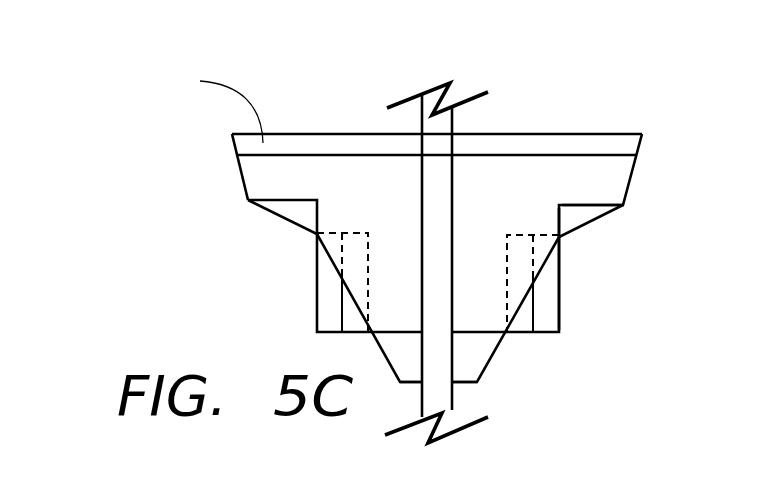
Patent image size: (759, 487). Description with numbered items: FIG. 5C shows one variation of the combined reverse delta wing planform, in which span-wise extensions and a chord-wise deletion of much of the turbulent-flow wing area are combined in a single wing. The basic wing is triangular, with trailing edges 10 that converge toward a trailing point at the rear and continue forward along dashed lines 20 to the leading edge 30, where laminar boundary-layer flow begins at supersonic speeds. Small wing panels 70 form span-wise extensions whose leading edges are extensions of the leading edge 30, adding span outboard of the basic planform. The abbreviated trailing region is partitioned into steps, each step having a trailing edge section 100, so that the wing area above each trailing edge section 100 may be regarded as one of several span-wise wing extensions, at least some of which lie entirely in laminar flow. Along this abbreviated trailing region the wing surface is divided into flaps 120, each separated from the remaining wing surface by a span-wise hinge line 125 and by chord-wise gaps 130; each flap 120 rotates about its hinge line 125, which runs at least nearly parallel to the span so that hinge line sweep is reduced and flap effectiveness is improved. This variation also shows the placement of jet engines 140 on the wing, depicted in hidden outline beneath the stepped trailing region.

The trailing edge 10 is at (477, 381).
The dashed line 20 is at (131, 137).
The leading edge 30 is at (306, 133).
The wing panel 70 is at (238, 170).
The trailing edge section 100 is at (290, 222).
The flap 120 is at (578, 216).
The hinge line 125 is at (585, 203).
The chord-wise gap 130 is at (560, 216).
The jet engine 140 is at (350, 317).